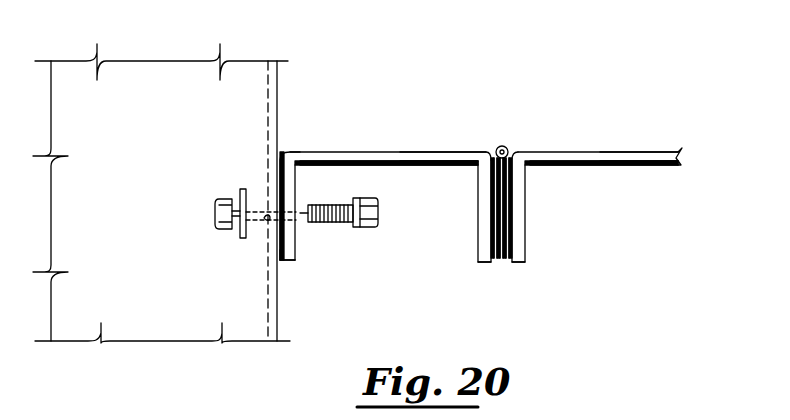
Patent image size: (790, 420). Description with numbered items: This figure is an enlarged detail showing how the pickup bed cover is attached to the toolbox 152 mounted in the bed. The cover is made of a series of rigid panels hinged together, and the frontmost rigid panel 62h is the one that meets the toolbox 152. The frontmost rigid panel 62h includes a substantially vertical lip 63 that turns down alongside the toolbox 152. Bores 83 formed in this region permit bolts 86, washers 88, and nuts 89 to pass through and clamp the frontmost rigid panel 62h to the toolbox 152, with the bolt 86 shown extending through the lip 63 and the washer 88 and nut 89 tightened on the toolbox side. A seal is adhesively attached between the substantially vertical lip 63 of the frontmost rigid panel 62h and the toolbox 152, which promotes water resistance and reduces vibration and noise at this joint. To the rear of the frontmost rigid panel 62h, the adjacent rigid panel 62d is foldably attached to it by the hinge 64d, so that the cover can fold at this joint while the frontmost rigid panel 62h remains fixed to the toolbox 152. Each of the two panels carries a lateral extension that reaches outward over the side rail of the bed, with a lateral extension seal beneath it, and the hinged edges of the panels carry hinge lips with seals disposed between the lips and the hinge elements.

The toolbox 152 is at (279, 85).
The substantially vertical lip 63 is at (297, 243).
The frontmost rigid panel 62h is at (343, 152).
The rigid panel 62d is at (563, 152).
The hinge 64d is at (503, 146).
The bolt 86 is at (366, 228).
The washer 88 is at (243, 188).
The nut 89 is at (223, 229).
The bore 83 is at (265, 222).